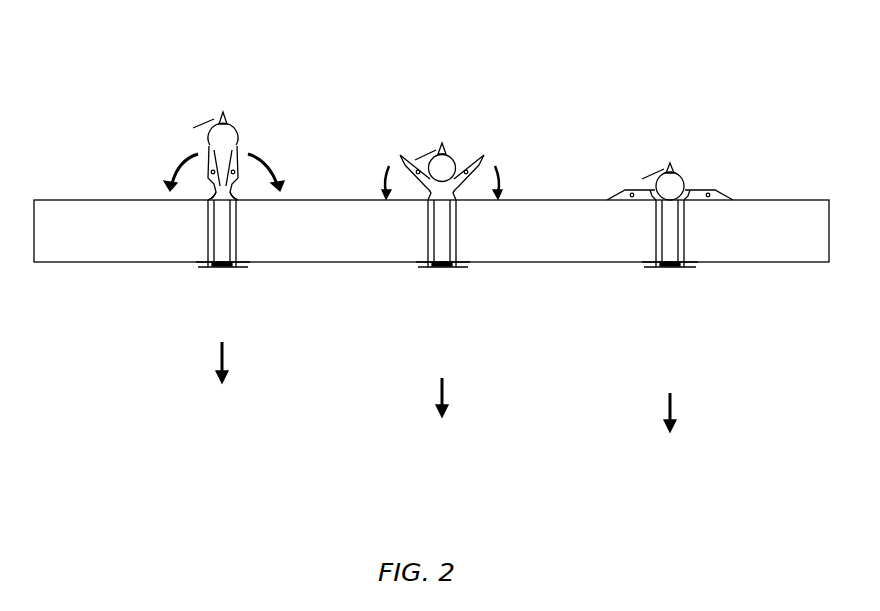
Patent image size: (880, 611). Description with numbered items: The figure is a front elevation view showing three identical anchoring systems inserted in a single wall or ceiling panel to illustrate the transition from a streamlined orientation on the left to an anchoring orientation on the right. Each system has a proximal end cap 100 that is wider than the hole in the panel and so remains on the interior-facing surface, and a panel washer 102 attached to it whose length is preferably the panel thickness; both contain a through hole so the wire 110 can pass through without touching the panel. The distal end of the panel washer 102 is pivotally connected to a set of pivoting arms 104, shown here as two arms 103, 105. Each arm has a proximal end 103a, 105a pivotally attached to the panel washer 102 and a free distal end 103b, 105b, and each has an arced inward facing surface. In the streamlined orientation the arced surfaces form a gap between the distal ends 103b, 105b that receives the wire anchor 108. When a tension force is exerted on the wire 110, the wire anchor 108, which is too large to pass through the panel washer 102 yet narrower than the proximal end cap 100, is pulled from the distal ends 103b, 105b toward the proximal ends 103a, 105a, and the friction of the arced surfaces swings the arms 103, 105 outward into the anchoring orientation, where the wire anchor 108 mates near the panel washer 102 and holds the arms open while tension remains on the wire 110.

The proximal end cap 100 is at (206, 268).
The panel washer 102 is at (687, 237).
The arm 103 is at (147, 122).
The proximal end of arm 103a is at (214, 150).
The distal end of arm 103b is at (210, 190).
The set of pivoting arms 104 is at (400, 155).
The arm 105 is at (290, 135).
The proximal end of arm 105a is at (234, 150).
The distal end of arm 105b is at (236, 190).
The wire anchor 108 is at (226, 122).
The wire 110 is at (223, 332).